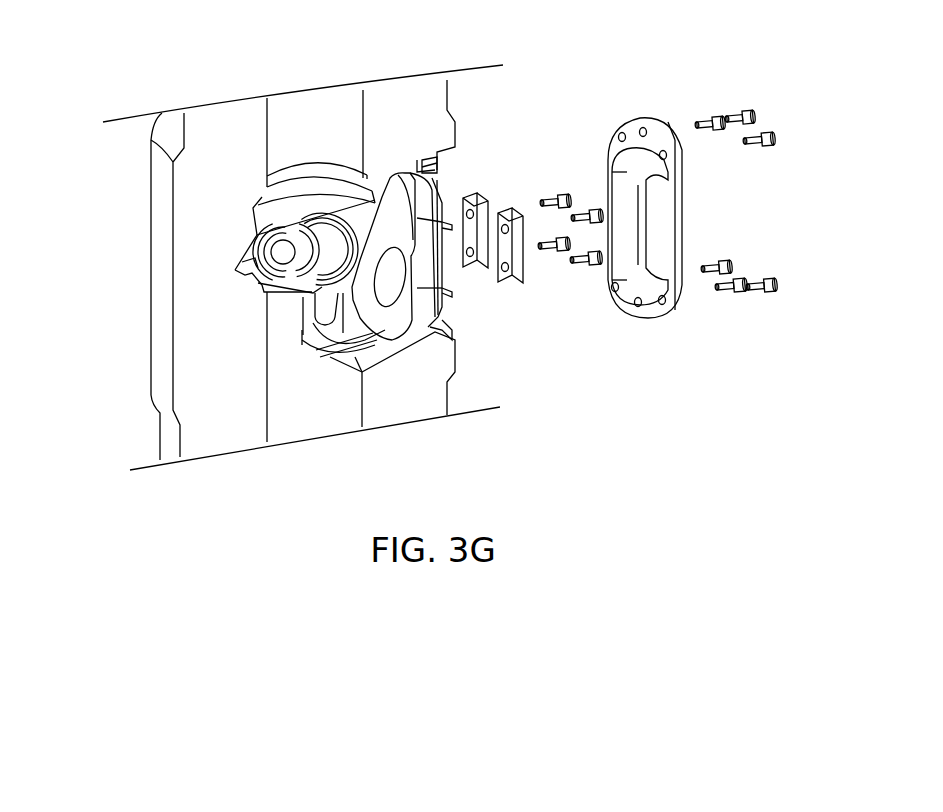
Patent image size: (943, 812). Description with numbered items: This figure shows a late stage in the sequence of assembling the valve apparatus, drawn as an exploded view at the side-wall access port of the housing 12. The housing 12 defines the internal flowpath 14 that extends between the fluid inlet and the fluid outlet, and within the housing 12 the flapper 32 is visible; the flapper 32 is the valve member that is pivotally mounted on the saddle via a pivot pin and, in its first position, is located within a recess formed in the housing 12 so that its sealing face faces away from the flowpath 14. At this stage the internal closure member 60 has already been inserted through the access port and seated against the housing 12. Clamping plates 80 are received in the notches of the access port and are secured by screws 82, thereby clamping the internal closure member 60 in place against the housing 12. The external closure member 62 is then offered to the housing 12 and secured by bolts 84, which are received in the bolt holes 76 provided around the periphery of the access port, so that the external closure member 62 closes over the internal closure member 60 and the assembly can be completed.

The housing 12 is at (188, 181).
The internal flowpath 14 is at (268, 122).
The flapper 32 is at (325, 200).
The internal closure member 60 is at (383, 328).
The external closure member 62 is at (682, 213).
The bolt holes 76 is at (427, 158).
The clamping plates 80 is at (522, 200).
The screws 82 is at (573, 213).
The bolts 84 is at (756, 136).